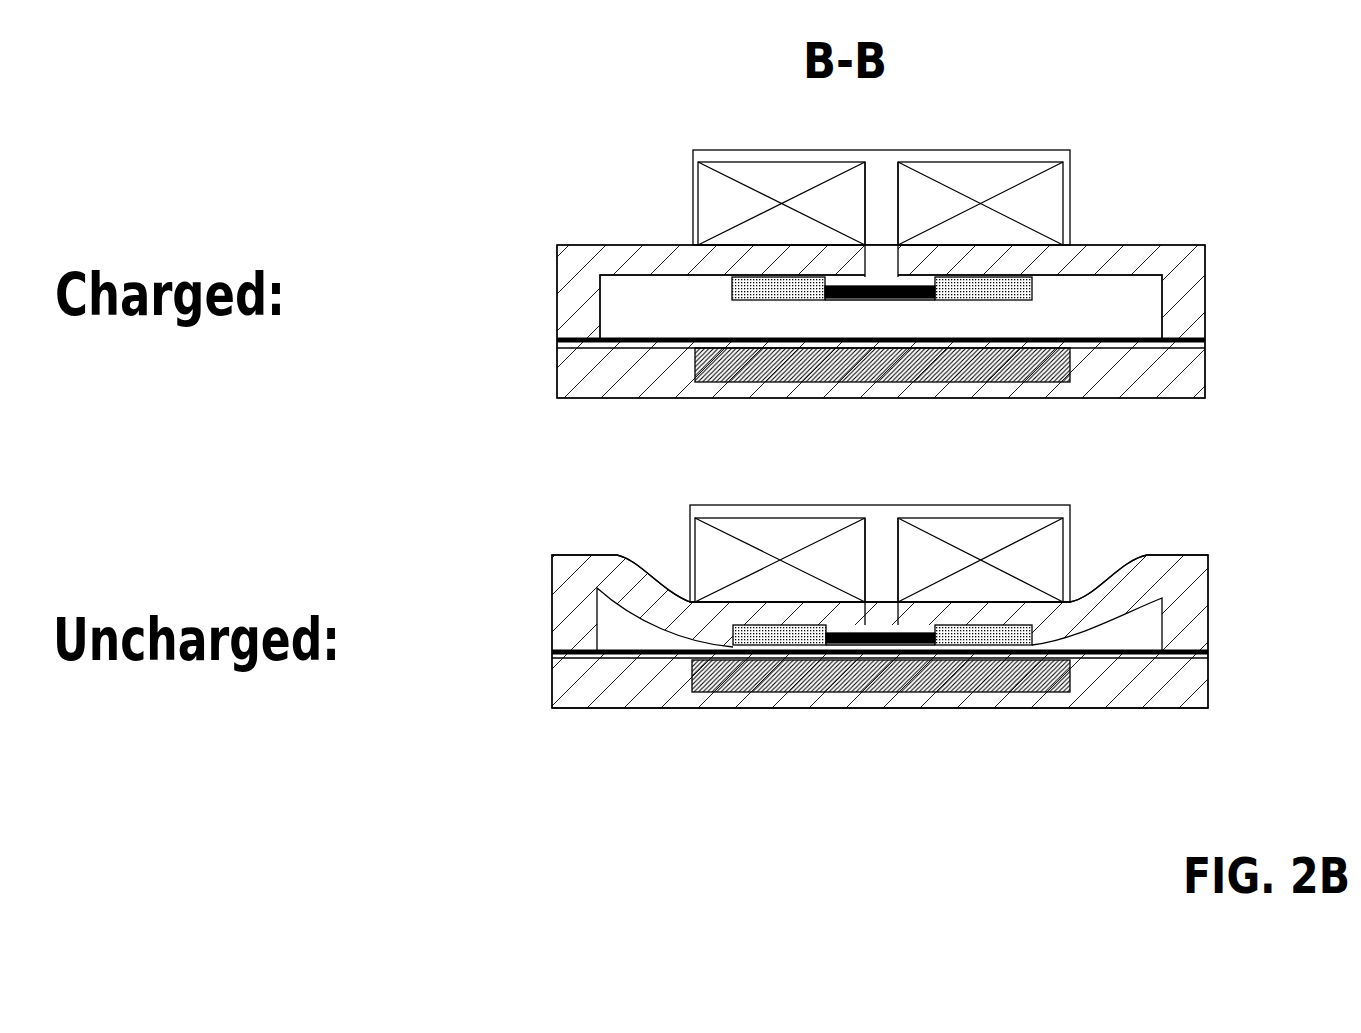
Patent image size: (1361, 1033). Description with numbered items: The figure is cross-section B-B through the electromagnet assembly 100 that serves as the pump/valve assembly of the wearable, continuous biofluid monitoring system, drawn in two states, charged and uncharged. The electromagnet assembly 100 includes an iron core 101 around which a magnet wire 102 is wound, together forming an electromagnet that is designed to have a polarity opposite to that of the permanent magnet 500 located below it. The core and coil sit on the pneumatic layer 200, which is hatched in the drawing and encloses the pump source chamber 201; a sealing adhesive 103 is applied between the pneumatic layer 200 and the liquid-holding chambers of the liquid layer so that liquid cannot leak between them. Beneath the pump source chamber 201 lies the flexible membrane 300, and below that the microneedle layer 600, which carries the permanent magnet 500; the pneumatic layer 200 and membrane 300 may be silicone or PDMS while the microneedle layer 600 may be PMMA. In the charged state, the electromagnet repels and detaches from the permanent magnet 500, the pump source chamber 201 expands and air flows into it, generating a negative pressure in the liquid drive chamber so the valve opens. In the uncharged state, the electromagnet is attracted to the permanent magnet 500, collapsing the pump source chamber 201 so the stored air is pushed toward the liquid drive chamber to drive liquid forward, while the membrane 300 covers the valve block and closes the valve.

The electromagnet assembly 100 is at (697, 121).
The iron core 101 is at (879, 192).
The magnet wire 102 is at (1048, 220).
The sealing adhesive 103 is at (1017, 293).
The pneumatic layer 200 is at (605, 263).
The pump source chamber 201 is at (640, 305).
The membrane 300 is at (1118, 348).
The permanent magnet 500 is at (692, 373).
The microneedle layer 600 is at (573, 386).